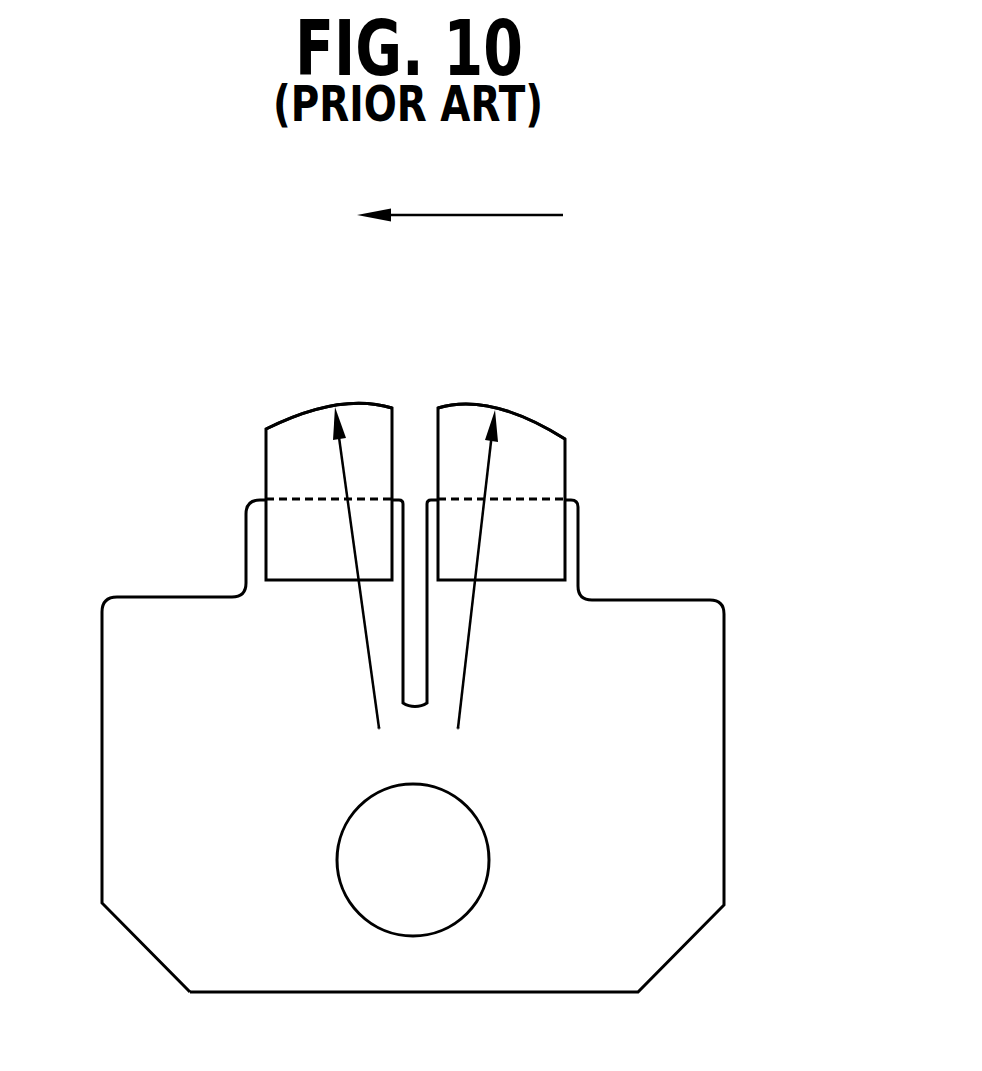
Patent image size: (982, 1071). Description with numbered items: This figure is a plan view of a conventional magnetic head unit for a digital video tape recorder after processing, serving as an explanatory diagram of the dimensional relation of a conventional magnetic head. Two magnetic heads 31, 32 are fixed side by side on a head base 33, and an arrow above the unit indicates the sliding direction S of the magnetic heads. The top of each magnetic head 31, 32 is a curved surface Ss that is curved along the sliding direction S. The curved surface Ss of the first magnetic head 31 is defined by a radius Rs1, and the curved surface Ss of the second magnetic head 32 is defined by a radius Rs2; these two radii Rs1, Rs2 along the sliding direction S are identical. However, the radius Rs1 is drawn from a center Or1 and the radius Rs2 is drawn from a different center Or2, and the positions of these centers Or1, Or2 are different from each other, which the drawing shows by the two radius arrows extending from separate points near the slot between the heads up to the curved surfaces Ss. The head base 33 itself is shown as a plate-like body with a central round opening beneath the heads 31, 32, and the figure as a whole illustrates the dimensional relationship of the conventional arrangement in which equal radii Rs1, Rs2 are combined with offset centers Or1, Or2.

The magnetic head 31 is at (518, 477).
The magnetic head 32 is at (293, 435).
The head base 33 is at (683, 783).
The curved surface Ss is at (373, 405).
The radius of curved surface Rs1 is at (503, 569).
The radius of curved surface Rs2 is at (333, 567).
The center of curved surface Or1 is at (497, 754).
The center of curved surface Or2 is at (346, 754).
The sliding direction S is at (460, 185).